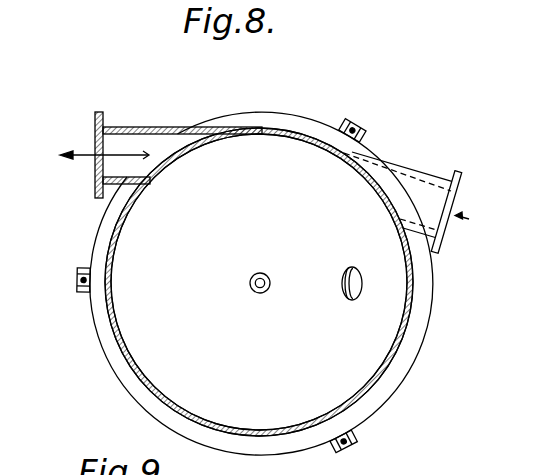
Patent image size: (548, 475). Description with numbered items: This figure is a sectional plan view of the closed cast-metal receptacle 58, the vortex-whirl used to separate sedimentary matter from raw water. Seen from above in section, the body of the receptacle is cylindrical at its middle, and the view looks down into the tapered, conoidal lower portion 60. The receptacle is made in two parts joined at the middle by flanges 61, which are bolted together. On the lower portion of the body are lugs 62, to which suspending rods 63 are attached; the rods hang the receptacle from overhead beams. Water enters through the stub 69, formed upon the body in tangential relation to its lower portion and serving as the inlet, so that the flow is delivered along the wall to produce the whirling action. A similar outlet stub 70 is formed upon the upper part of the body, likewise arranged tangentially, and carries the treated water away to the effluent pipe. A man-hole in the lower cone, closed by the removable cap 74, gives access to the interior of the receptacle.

The closed receptacle 58 is at (113, 330).
The lower portion 60 is at (370, 323).
The flanges 61 is at (392, 382).
The lugs 62 is at (83, 268).
The suspending rods 63 is at (78, 280).
The stub 69 is at (423, 148).
The outlet stub 70 is at (135, 127).
The removable cap 74 is at (362, 283).